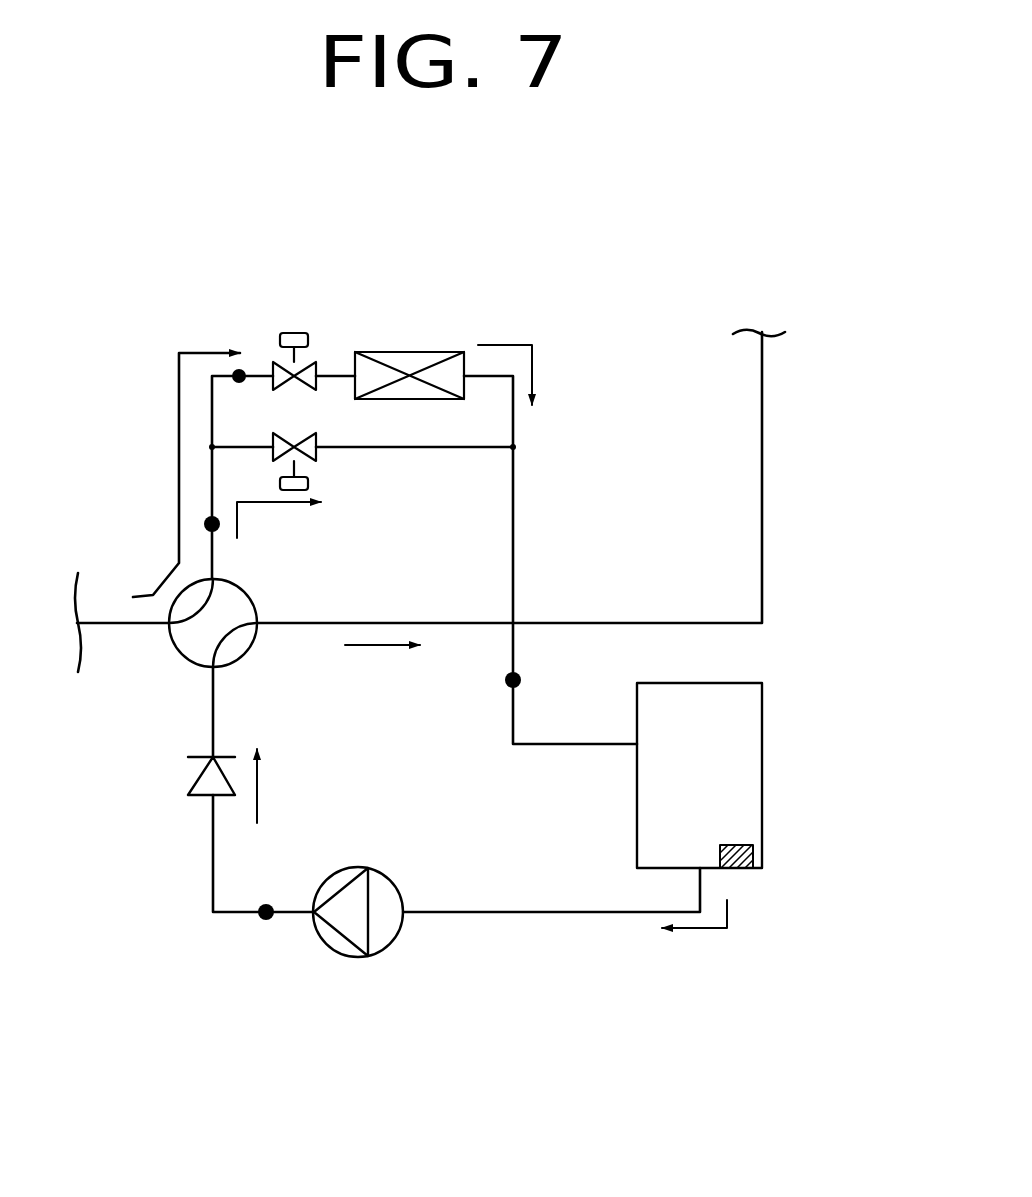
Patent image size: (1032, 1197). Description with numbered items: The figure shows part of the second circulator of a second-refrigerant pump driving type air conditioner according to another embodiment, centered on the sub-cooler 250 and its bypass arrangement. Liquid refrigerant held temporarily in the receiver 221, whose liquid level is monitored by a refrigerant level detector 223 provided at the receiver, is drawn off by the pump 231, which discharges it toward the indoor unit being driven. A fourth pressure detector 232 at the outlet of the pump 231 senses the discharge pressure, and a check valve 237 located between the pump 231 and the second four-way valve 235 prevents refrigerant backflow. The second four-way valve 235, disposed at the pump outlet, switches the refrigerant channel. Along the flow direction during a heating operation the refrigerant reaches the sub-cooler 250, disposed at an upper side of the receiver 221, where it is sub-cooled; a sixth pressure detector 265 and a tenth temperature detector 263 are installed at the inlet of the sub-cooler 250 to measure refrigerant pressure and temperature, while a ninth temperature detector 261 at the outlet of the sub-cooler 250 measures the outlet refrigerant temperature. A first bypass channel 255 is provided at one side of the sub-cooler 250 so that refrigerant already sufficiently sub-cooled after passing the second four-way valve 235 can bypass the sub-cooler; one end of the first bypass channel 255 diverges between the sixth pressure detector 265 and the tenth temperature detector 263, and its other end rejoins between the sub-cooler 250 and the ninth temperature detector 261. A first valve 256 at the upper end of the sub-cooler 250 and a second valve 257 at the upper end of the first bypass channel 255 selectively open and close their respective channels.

The receiver 221 is at (745, 765).
The refrigerant level detector 223 is at (753, 850).
The pump 231 is at (338, 953).
The fourth pressure detector 232 is at (266, 920).
The second four-way valve 235 is at (175, 652).
The check valve 237 is at (202, 774).
The sub-cooler 250 is at (411, 358).
The first bypass channel 255 is at (477, 449).
The first valve 256 is at (296, 333).
The second valve 257 is at (308, 483).
The ninth temperature detector 261 is at (520, 676).
The tenth temperature detector 263 is at (243, 371).
The sixth pressure detector 265 is at (205, 523).